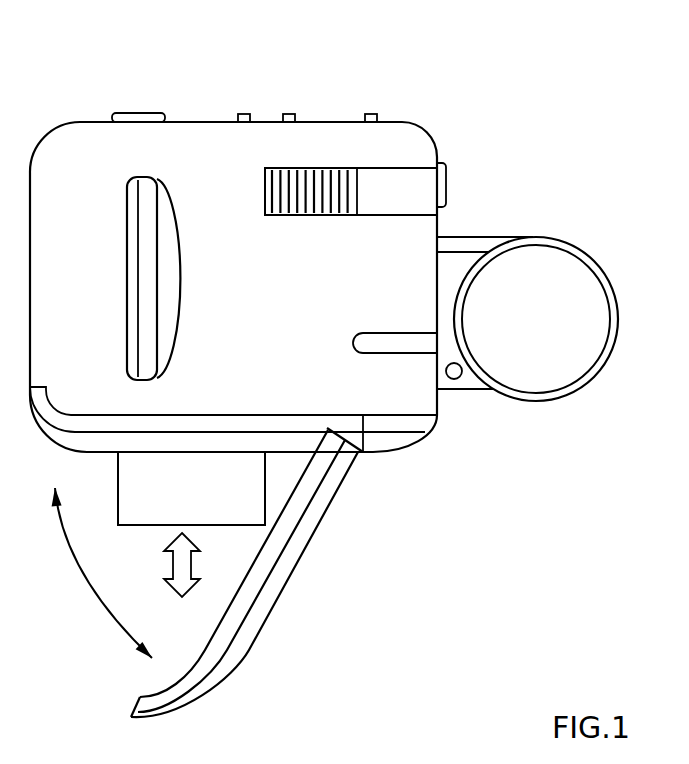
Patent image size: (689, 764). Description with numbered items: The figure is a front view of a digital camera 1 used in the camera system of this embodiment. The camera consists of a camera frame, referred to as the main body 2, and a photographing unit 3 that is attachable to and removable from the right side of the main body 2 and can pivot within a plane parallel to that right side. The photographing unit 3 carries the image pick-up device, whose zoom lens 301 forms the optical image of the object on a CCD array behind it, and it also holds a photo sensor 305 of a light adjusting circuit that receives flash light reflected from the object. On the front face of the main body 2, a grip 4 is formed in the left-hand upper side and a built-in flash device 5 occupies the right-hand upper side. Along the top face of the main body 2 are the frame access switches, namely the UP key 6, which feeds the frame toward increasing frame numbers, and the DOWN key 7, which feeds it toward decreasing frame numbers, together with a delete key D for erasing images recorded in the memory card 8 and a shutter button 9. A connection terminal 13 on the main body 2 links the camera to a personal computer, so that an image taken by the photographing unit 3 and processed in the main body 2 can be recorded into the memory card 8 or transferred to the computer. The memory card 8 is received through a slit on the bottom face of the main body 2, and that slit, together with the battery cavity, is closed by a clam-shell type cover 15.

The digital camera 1 is at (222, 80).
The main body 2 is at (200, 121).
The photographing unit 3 is at (545, 237).
The grip 4 is at (145, 315).
The built-in flash device 5 is at (328, 217).
The UP key 6 is at (243, 113).
The DOWN key 7 is at (288, 113).
The delete key D is at (370, 113).
The memory card 8 is at (130, 482).
The shutter button 9 is at (136, 113).
The connection terminal 13 is at (447, 188).
The clam-shell type cover 15 is at (302, 547).
The zoom lens 301 is at (578, 361).
The photo sensor 305 is at (455, 380).